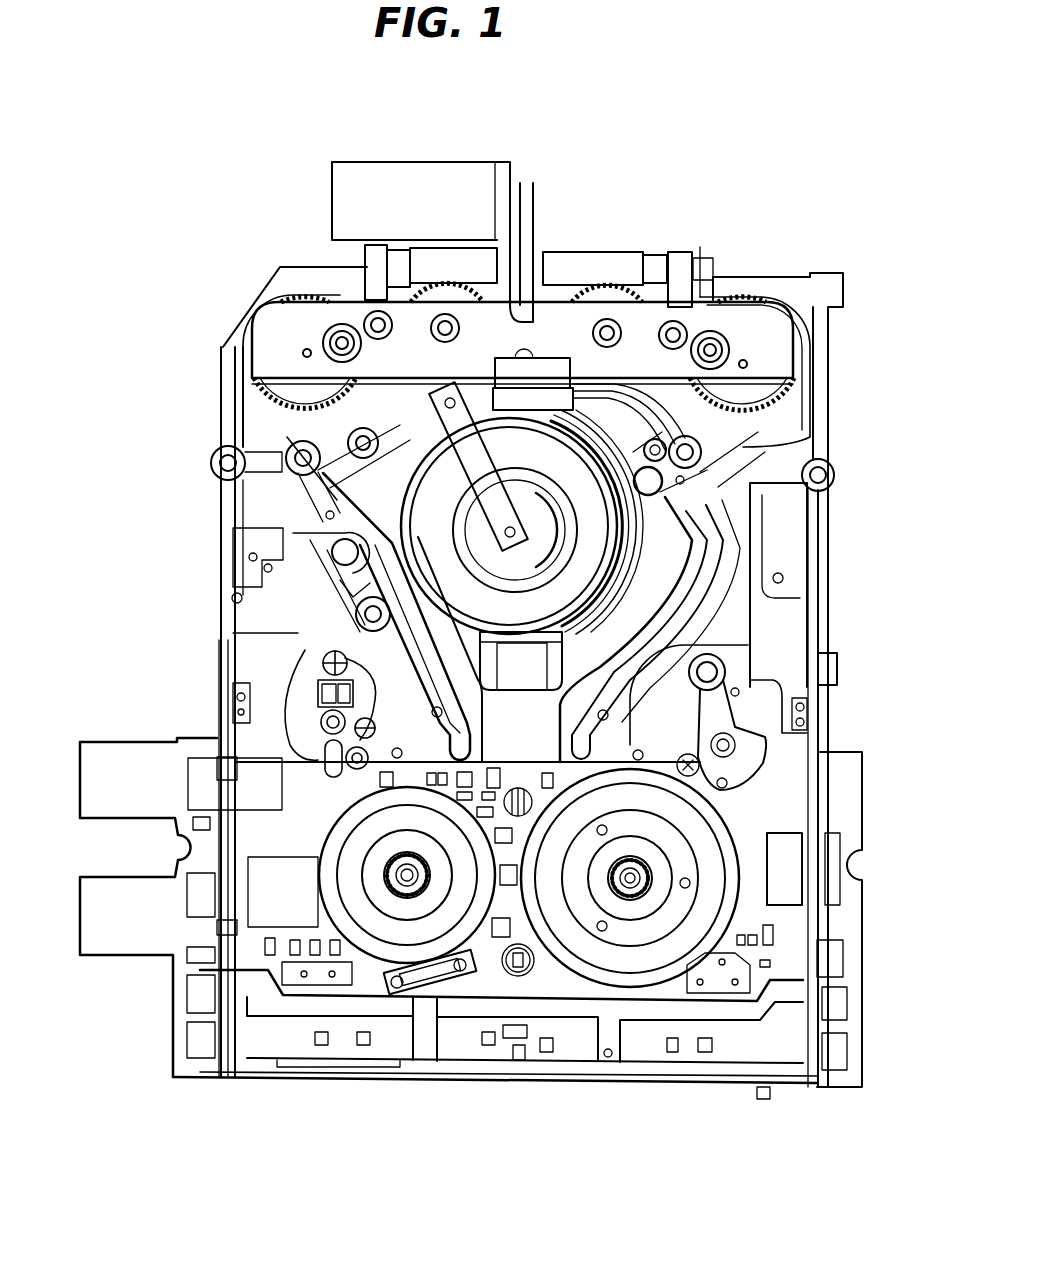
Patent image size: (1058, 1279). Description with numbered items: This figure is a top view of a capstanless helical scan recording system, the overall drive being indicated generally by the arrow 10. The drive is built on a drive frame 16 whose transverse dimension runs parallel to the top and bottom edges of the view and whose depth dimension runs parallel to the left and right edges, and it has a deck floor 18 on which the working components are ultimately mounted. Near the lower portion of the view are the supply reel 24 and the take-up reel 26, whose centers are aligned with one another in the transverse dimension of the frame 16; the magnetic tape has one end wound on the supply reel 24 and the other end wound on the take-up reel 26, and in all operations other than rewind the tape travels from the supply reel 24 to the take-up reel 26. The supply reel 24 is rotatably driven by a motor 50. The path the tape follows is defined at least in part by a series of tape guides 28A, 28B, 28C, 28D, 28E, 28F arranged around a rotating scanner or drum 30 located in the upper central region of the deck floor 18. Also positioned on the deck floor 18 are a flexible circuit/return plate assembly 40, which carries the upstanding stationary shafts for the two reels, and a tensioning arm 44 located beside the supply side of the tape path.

The tape transport mechanism 10 is at (814, 128).
The drive frame 16 is at (827, 676).
The deck floor 18 is at (743, 625).
The supply reel 24 is at (357, 848).
The take-up reel 26 is at (710, 848).
The tape guide 28A is at (363, 613).
The tape guide 28B is at (338, 556).
The tape guide 28C is at (355, 443).
The tape guide 28D is at (377, 325).
The tape guide 28E is at (647, 470).
The tape guide 28F is at (700, 455).
The rotating scanner or drum 30 is at (552, 445).
The flexible circuit/return plate assembly 40 is at (775, 920).
The tensioning arm 44 is at (318, 702).
The motor 50 is at (443, 980).